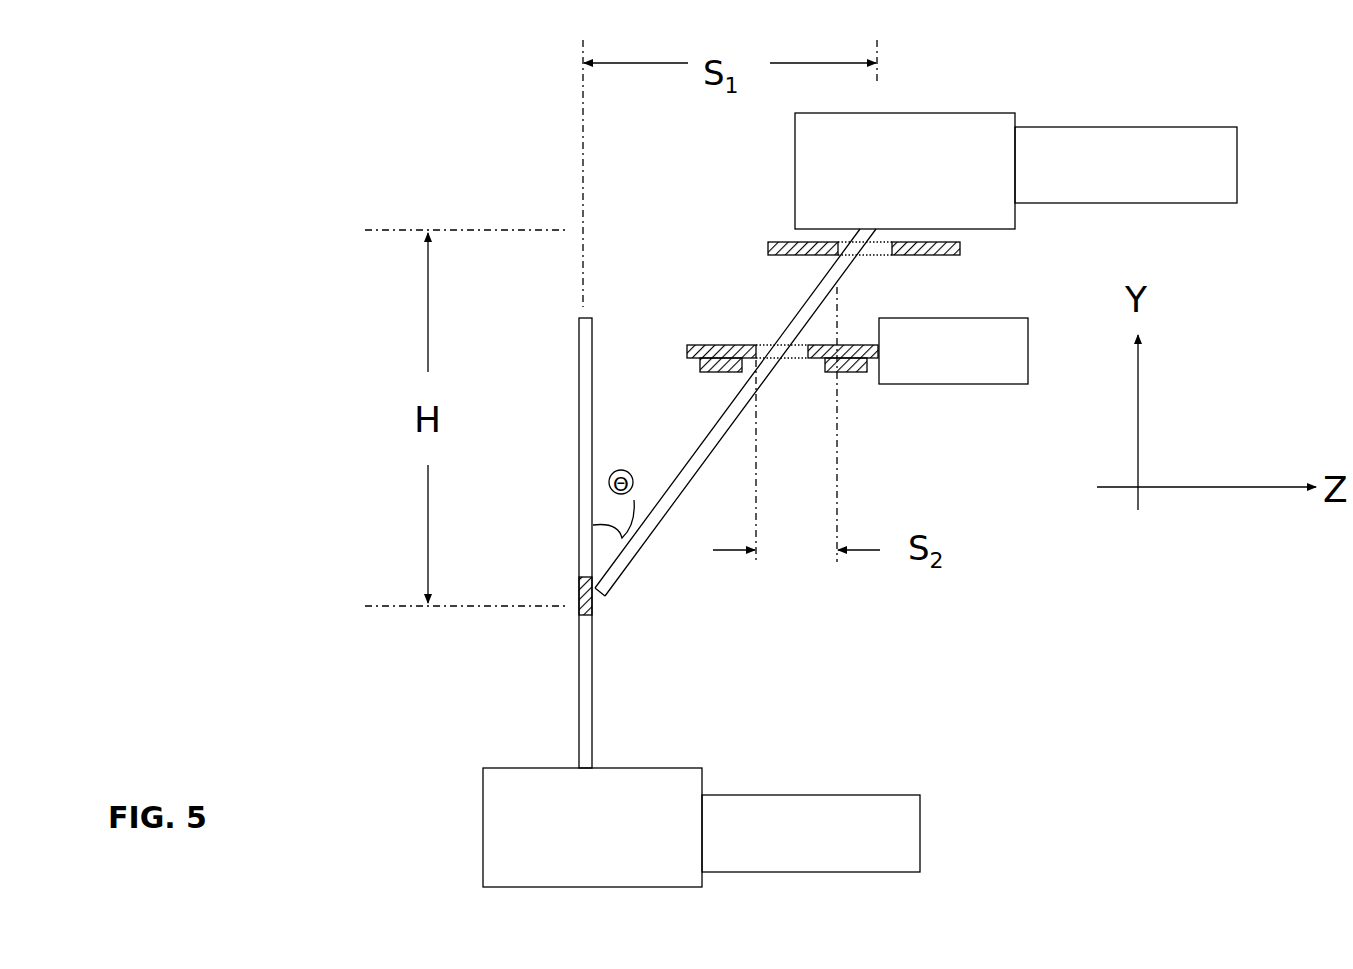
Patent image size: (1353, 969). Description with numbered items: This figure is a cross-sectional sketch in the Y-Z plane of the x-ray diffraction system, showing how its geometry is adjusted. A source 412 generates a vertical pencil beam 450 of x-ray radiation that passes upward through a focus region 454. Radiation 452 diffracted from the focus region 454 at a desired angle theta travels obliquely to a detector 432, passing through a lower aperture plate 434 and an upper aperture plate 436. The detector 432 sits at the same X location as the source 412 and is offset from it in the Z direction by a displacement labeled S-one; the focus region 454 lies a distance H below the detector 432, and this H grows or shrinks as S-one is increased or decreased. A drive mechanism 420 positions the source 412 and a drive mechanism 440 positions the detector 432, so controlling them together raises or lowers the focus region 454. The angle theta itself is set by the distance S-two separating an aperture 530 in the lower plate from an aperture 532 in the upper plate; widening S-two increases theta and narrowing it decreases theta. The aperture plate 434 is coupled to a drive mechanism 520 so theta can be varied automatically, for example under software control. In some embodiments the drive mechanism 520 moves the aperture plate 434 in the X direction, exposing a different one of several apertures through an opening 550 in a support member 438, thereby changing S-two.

The source 412 is at (483, 820).
The drive mechanism 420 is at (870, 795).
The detector 432 is at (922, 113).
The aperture plate 434 is at (687, 350).
The aperture plate 436 is at (768, 248).
The support member 438 is at (700, 366).
The drive mechanism 440 is at (1180, 127).
The pencil beam 450 is at (593, 665).
The radiation 452 is at (688, 473).
The focus region 454 is at (580, 598).
The drive mechanism 520 is at (962, 384).
The aperture 530 is at (795, 360).
The aperture 532 is at (877, 256).
The opening 550 is at (782, 374).